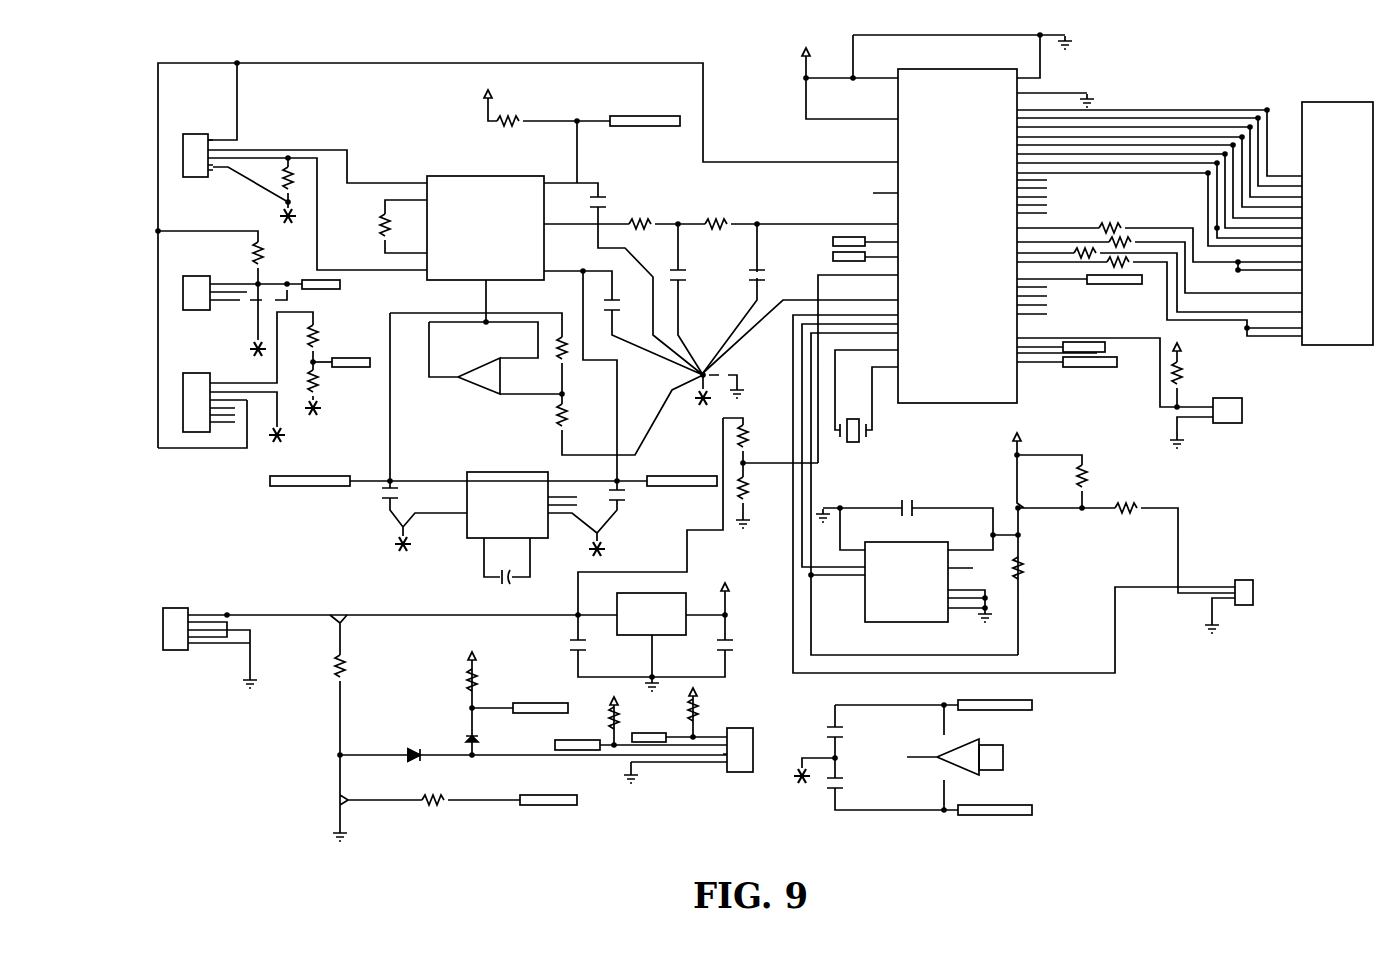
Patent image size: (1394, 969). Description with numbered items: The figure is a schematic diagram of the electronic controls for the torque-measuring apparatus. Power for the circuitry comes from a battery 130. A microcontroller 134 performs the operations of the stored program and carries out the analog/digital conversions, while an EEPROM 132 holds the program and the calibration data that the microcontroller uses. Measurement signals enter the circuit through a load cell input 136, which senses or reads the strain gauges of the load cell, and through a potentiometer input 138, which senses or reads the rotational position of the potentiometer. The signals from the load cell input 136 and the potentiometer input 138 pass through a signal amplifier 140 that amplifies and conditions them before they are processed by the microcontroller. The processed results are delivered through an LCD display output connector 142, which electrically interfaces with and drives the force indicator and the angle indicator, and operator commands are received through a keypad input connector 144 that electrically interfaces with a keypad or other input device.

The battery 130 is at (177, 603).
The EEPROM 132 is at (913, 630).
The microcontroller 134 is at (1045, 88).
The load cell input 136 is at (240, 133).
The potentiometer input 138 is at (188, 313).
The signal amplifier 140 is at (480, 168).
The LCD display output connector 142 is at (1320, 97).
The keypad input connector 144 is at (745, 773).